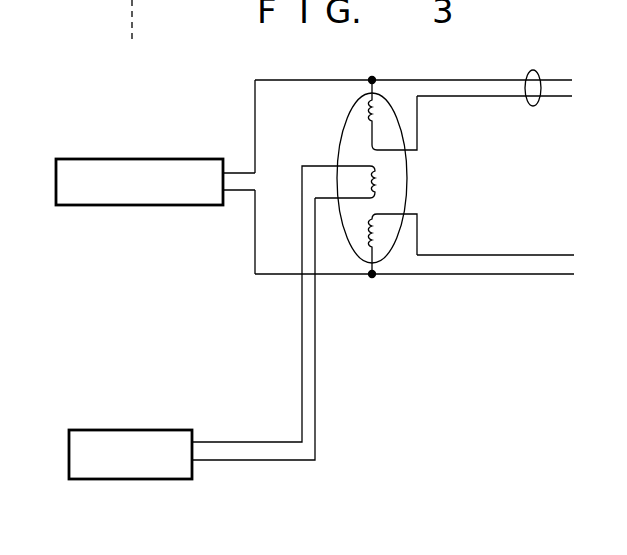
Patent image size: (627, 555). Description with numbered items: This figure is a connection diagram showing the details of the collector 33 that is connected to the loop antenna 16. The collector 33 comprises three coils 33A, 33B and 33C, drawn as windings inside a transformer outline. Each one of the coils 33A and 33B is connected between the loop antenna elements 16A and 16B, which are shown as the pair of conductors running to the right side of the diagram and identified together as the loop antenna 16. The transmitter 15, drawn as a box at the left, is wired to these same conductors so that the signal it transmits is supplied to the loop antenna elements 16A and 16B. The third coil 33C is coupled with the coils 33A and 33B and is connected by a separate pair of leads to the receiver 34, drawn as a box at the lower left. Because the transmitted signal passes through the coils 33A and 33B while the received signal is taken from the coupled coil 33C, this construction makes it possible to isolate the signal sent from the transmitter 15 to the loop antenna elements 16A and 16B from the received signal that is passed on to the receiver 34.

The transmitter 15 is at (125, 159).
The loop antenna 16 is at (546, 68).
The loop antenna element 16A is at (470, 80).
The loop antenna element 16B is at (470, 97).
The collector 33 is at (381, 95).
The coil 33A is at (363, 115).
The coil 33B is at (375, 236).
The coil 33C is at (380, 181).
The receiver 34 is at (133, 430).